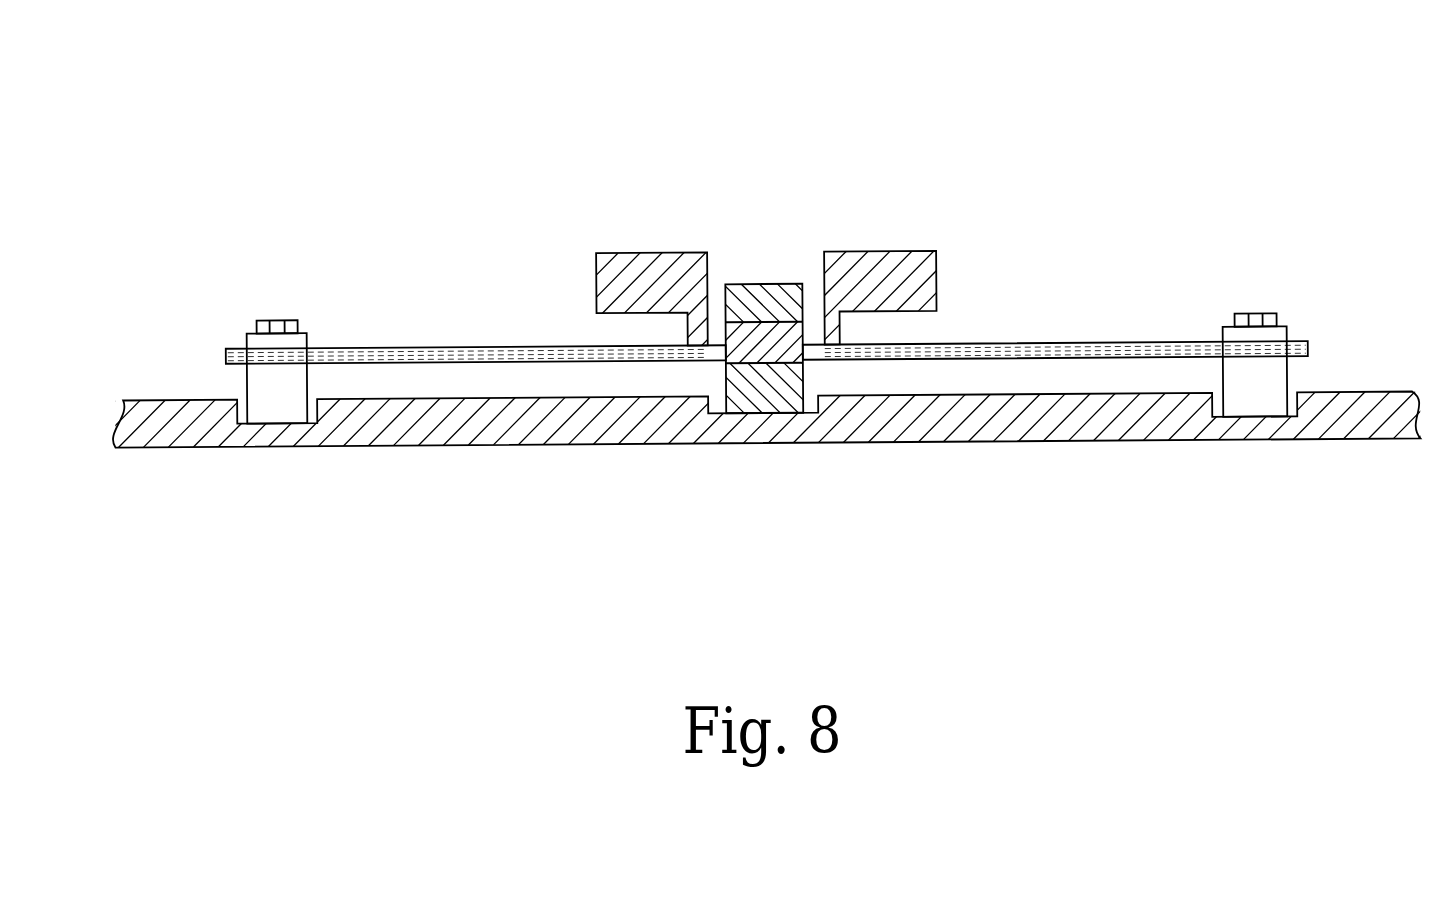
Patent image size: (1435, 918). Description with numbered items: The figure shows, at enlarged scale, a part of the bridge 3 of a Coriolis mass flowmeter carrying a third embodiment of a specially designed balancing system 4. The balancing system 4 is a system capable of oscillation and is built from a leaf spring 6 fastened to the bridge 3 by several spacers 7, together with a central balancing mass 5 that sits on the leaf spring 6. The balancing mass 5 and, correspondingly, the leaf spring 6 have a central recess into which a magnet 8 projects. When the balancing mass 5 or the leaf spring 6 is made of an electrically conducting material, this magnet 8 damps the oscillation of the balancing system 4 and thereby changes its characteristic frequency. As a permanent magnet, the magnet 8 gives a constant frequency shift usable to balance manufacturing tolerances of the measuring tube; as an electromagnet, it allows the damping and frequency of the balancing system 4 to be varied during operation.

The bridge 3 is at (1347, 408).
The balancing system 4 is at (237, 130).
The balancing mass 5 is at (610, 270).
The leaf spring 6 is at (415, 352).
The spacer 7 is at (268, 386).
The magnet 8 is at (765, 298).